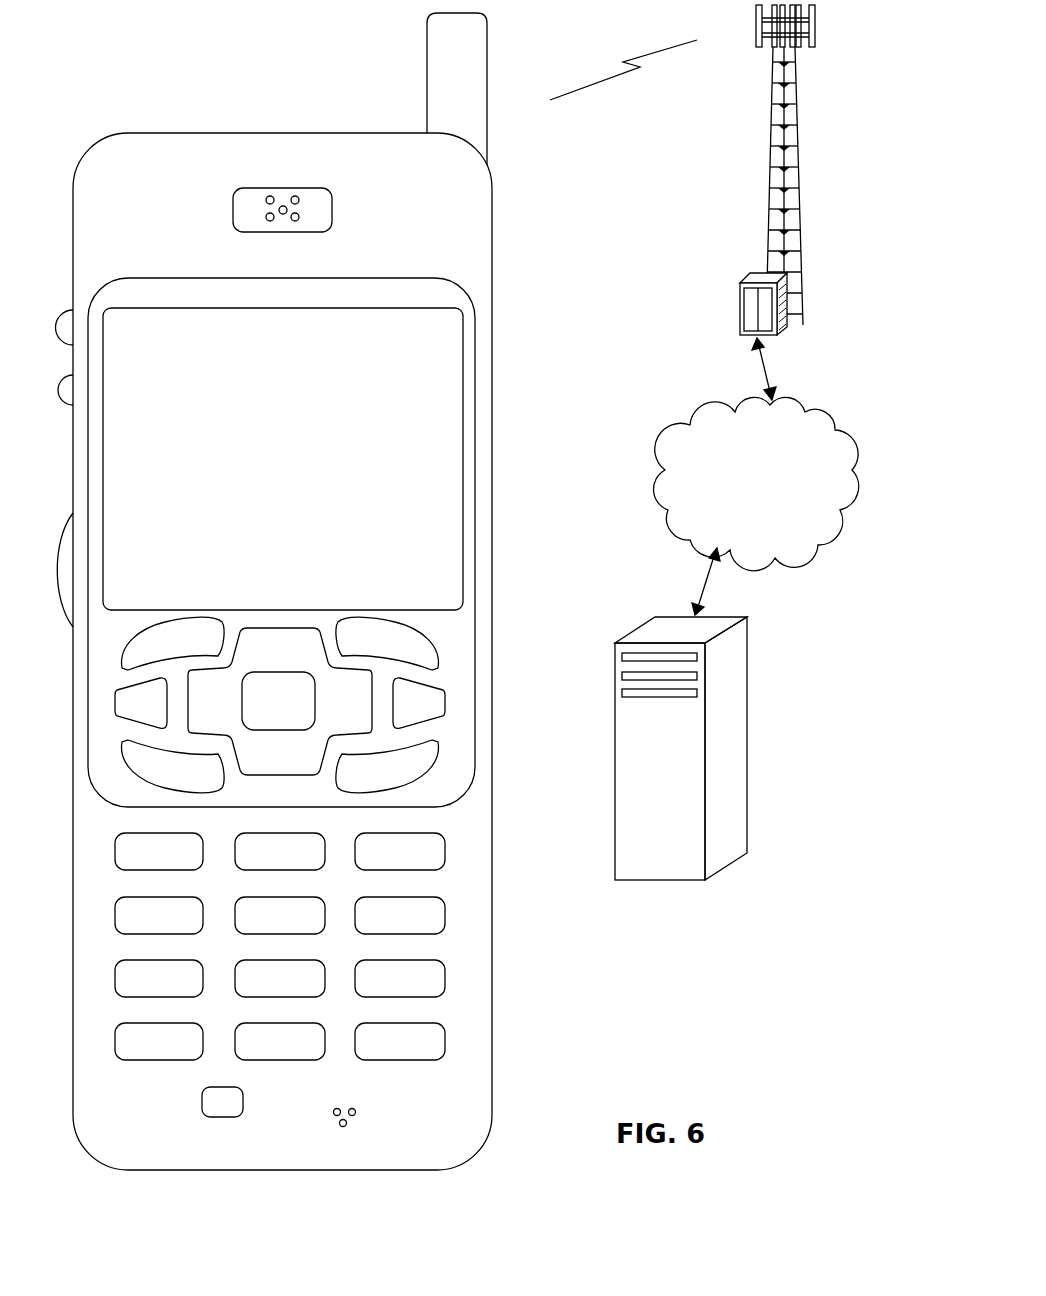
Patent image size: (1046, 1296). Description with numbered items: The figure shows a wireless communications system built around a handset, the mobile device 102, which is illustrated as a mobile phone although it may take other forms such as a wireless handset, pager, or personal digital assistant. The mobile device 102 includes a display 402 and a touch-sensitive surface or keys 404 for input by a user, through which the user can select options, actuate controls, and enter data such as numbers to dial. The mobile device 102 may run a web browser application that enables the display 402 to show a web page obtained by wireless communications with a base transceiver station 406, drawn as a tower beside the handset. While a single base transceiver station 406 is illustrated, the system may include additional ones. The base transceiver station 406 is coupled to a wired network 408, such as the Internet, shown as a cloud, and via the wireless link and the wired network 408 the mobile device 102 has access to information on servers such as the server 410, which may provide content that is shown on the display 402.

The mobile device 102 is at (312, 605).
The display 402 is at (465, 322).
The keys 404 is at (503, 1069).
The base transceiver station 406 is at (770, 183).
The wired network 408 is at (672, 531).
The server 410 is at (657, 882).